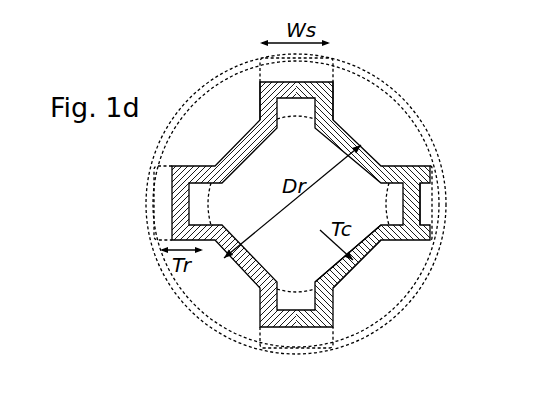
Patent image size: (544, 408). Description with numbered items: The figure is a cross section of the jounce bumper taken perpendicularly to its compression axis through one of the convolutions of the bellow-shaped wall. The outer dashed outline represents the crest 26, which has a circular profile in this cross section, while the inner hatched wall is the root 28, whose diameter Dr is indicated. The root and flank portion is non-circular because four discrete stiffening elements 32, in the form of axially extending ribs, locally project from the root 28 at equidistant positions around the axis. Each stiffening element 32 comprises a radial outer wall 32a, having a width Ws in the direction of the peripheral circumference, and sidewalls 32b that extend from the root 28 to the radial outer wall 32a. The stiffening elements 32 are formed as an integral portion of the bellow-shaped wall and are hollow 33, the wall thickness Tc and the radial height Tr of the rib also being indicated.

The crest 26 is at (407, 92).
The root 28 is at (363, 155).
The stiffening elements 32 is at (418, 176).
The radial outer wall 32a is at (288, 72).
The side walls 32b is at (258, 100).
The hollow 33 is at (362, 272).